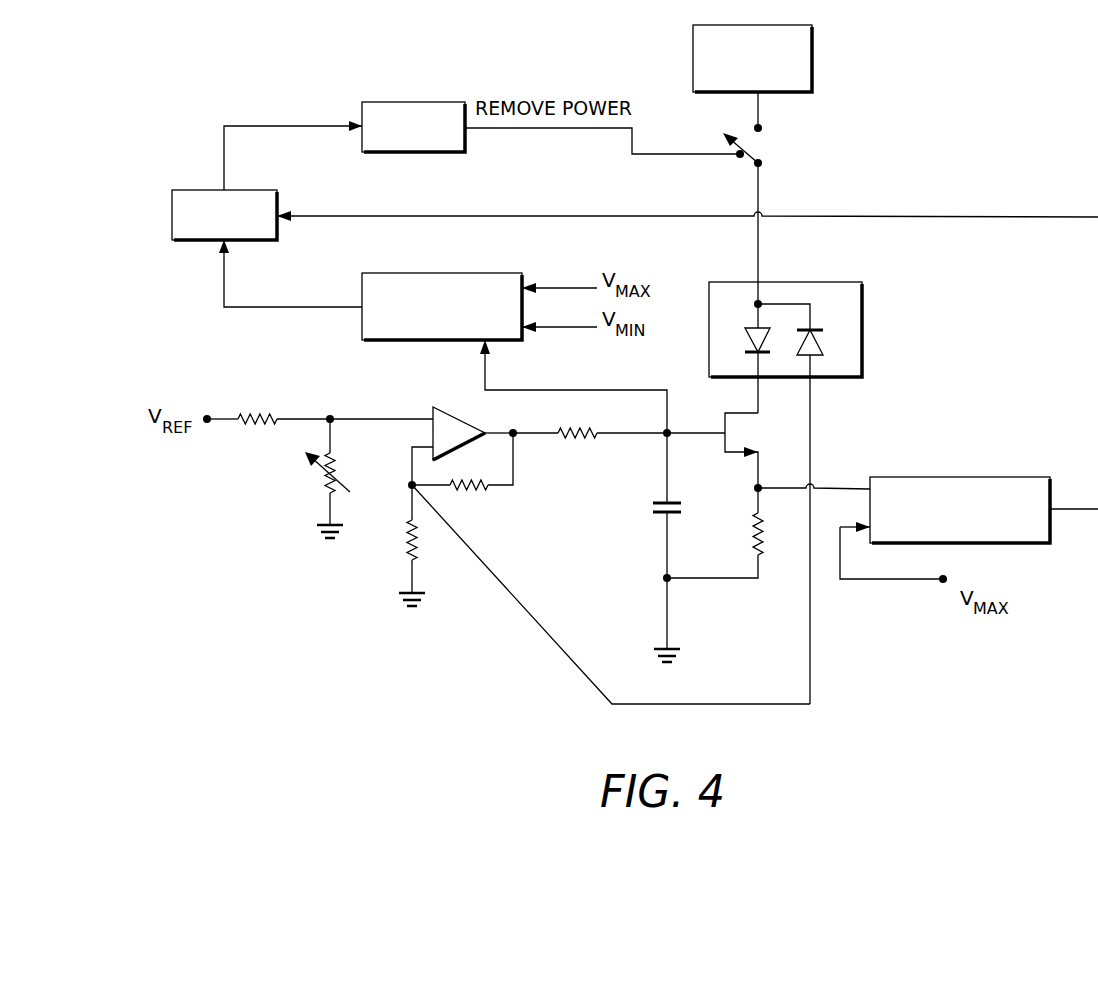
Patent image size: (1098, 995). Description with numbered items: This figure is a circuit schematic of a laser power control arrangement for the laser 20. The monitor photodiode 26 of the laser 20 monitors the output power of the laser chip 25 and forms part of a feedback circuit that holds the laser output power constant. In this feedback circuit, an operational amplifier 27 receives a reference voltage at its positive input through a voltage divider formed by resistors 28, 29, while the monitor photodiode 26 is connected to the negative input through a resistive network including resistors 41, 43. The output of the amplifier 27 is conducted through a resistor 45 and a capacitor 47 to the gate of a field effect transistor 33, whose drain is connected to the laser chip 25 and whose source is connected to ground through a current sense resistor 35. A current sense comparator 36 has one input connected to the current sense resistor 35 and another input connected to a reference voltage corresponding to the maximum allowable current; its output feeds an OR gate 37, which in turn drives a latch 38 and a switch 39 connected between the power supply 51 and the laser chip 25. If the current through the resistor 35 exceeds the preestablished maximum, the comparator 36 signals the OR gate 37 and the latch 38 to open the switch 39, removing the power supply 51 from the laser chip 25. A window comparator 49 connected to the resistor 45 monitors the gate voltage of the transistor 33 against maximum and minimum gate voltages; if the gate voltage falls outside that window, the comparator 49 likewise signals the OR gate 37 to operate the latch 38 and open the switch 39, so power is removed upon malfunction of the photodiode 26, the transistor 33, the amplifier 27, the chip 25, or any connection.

The laser 20 is at (799, 480).
The laser chip 25 is at (754, 326).
The monitor photodiode 26 is at (815, 330).
The operational amplifier 27 is at (463, 418).
The resistor 28 is at (256, 411).
The resistor 29 is at (323, 473).
The field effect transistor 33 is at (722, 442).
The current sense resistor 35 is at (752, 522).
The current sense comparator 36 is at (958, 477).
The OR gate 37 is at (172, 214).
The latch 38 is at (414, 102).
The switch 39 is at (746, 163).
The resistor 41 is at (405, 550).
The resistor 43 is at (466, 493).
The resistor 45 is at (575, 440).
The capacitor 47 is at (656, 500).
The window comparator 49 is at (441, 273).
The power supply 51 is at (812, 60).